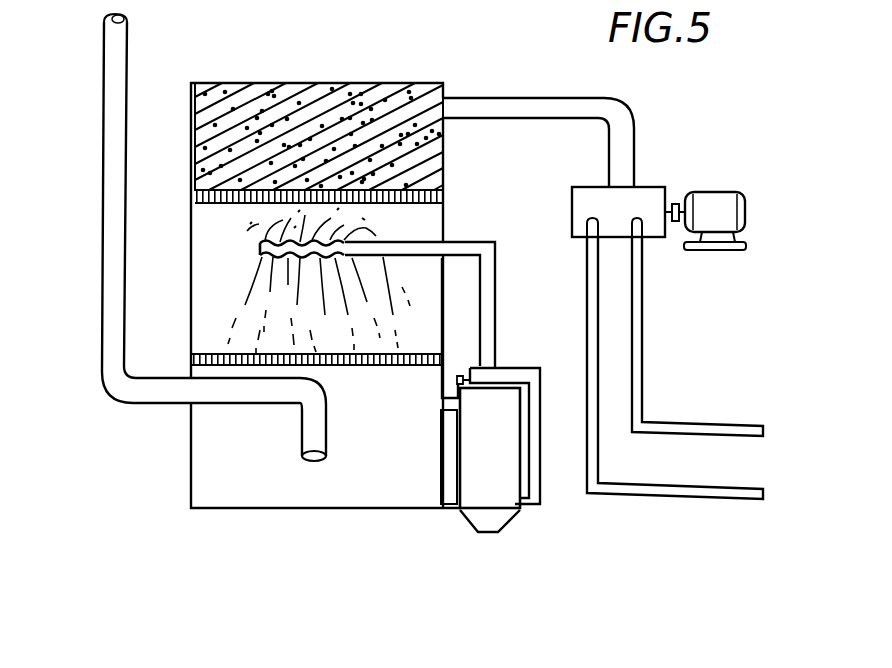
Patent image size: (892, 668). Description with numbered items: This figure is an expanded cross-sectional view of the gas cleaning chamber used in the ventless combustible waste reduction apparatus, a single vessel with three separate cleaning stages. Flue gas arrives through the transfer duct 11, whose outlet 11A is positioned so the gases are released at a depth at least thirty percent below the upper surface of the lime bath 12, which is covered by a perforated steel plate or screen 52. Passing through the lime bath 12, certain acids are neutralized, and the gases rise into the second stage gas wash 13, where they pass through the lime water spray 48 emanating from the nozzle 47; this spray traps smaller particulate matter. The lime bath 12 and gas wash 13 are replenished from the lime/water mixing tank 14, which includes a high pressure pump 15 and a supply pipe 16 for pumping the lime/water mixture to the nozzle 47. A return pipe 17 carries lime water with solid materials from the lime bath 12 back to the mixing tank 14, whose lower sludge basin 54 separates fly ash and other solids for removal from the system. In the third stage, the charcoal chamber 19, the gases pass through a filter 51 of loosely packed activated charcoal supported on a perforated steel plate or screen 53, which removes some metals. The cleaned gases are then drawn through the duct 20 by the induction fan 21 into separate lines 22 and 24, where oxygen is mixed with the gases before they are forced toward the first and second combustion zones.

The transfer duct 11 is at (112, 70).
The outlet of transfer duct 11A is at (313, 462).
The lime bath 12 is at (200, 466).
The gas wash 13 is at (200, 270).
The lime/water mixing tank 14 is at (503, 485).
The high pressure pump 15 is at (500, 366).
The supply pipe 16 is at (498, 283).
The return pipe 17 is at (448, 420).
The charcoal chamber 19 is at (302, 83).
The duct 20 is at (623, 142).
The induction fan 21 is at (748, 209).
The line 22 is at (752, 490).
The line 24 is at (752, 428).
The nozzle 47 is at (262, 247).
The lime water spray 48 is at (250, 300).
The filter 51 is at (218, 150).
The perforated steel plate or screen 52 is at (358, 366).
The perforated steel plate or screen 53 is at (440, 202).
The lower sludge basin 54 is at (480, 526).